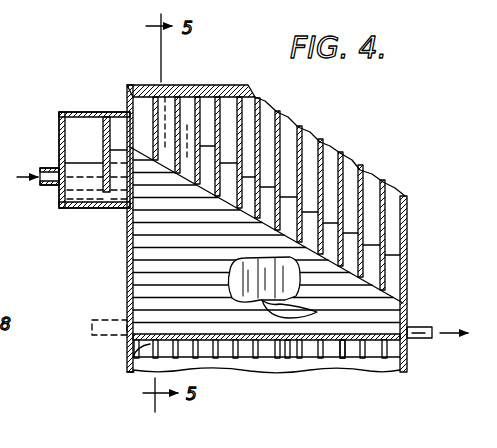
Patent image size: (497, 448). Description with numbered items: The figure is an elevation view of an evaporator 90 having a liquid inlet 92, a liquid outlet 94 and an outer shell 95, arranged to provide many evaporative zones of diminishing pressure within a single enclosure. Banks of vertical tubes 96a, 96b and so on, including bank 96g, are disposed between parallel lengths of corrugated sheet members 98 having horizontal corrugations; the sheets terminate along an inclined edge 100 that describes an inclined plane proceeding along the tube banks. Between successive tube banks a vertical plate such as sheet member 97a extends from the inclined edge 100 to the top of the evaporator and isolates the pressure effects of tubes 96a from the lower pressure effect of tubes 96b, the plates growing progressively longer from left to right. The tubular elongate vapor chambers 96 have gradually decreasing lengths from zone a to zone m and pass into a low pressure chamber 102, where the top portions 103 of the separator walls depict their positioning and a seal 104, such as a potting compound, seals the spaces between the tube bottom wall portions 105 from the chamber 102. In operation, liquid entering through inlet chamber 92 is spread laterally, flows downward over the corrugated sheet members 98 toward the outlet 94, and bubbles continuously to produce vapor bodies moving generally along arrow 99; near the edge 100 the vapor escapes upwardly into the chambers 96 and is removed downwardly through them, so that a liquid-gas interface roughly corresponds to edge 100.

The evaporator 90 is at (410, 272).
The liquid inlet 92 is at (100, 209).
The liquid outlet 94 is at (428, 330).
The outer shell 95 is at (127, 262).
The tubular elongate vapor chamber 96 is at (302, 406).
The tube bank 96a is at (145, 122).
The tube bank 96b is at (163, 132).
The tube bank 96g is at (268, 197).
The sheet member 97a is at (155, 85).
The corrugated sheet member 98 is at (145, 290).
The arrow 99 is at (240, 216).
The inclined edge 100 is at (328, 256).
The low pressure chamber 102 is at (388, 368).
The top portion of separator wall 103 is at (235, 358).
The seal 104 is at (350, 358).
The tube bottom wall portion 105 is at (133, 370).